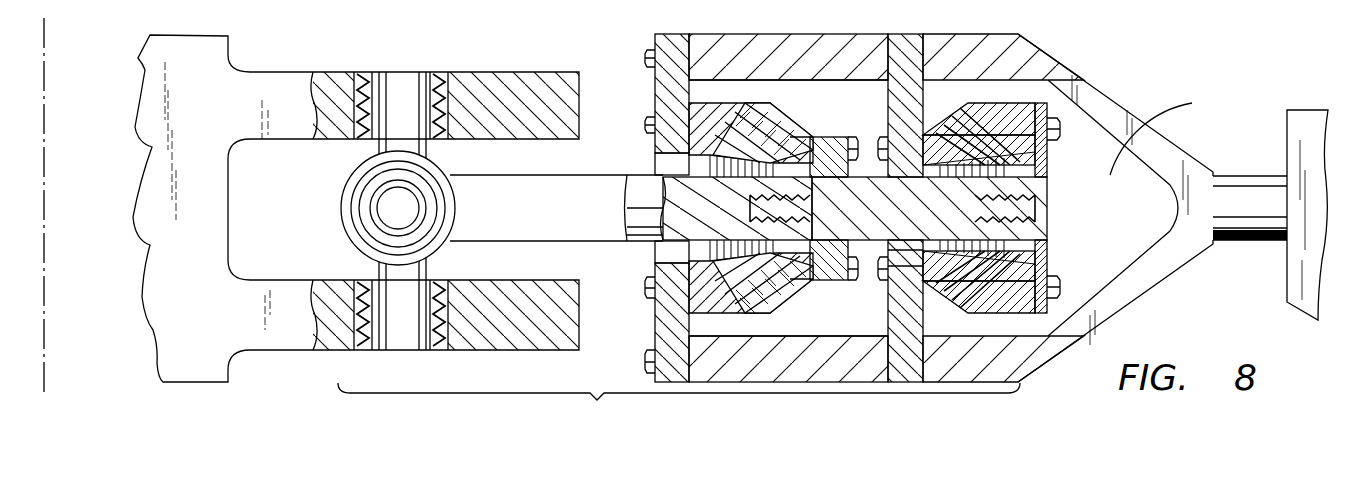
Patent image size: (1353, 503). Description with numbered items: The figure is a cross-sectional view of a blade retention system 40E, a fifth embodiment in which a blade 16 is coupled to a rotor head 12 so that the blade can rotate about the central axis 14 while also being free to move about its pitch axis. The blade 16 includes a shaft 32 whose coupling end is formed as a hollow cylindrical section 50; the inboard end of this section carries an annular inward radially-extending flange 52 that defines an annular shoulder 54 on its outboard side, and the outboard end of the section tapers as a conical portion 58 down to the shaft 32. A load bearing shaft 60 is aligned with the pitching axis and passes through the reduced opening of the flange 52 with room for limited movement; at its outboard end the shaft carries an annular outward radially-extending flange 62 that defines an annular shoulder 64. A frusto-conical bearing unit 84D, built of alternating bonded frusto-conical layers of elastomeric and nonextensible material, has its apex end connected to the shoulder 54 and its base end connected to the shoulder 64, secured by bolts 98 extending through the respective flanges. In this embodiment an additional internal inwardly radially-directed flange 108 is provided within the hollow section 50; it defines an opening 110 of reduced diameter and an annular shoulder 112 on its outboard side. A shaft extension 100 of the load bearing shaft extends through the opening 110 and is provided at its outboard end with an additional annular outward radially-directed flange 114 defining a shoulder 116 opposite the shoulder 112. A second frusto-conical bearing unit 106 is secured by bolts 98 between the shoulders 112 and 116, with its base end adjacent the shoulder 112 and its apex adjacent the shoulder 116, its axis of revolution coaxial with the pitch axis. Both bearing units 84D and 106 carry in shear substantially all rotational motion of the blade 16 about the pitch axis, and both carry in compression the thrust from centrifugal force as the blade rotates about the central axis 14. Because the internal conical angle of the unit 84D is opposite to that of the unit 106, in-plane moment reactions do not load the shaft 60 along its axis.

The rotor head 12 is at (249, 58).
The central axis 14 is at (44, 44).
The blade 16 is at (1287, 138).
The shaft 32 is at (1256, 247).
The retention system 40E is at (679, 408).
The hollow cylindrical section 50 is at (830, 34).
The annular inward radially-extending flange 52 is at (657, 80).
The annular shoulder 54 is at (695, 90).
The conical portion 58 is at (1120, 108).
The load bearing shaft 60 is at (636, 245).
The annular outward radially-extending flange 62 is at (840, 137).
The annular shoulder 64 is at (800, 137).
The frusto-conical bearing unit 84D is at (785, 102).
The bolts 98 is at (652, 124).
The shaft extension 100 is at (1047, 225).
The frusto-conical bearing unit 106 is at (975, 112).
The internal inwardly radially-directed flange 108 is at (908, 34).
The opening 110 is at (900, 252).
The annular shoulder 112 is at (923, 106).
The annular outward radially-directed flange 114 is at (1180, 118).
The shoulder 116 is at (1036, 140).